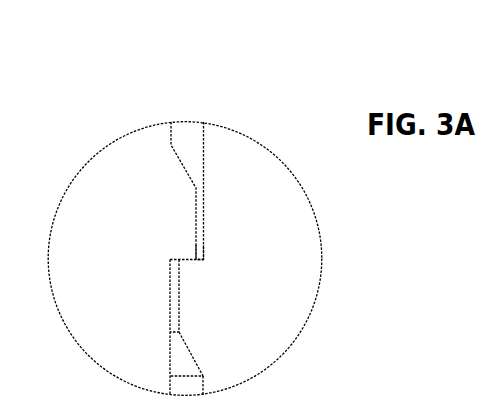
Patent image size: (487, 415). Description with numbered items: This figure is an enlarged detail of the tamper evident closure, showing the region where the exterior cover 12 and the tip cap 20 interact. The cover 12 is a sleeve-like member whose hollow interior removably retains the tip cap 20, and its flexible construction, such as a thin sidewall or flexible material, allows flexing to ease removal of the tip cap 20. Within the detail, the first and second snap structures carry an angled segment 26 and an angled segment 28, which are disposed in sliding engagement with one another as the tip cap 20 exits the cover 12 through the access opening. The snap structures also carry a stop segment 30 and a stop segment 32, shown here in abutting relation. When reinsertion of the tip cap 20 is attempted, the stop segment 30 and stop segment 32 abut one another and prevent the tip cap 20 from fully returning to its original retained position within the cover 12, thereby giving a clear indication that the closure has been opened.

The exterior cover 12 is at (304, 248).
The tip cap 20 is at (117, 182).
The angled segment 26 is at (181, 157).
The angled segment 28 is at (188, 350).
The stop segment 30 is at (183, 259).
The stop segment 32 is at (203, 259).